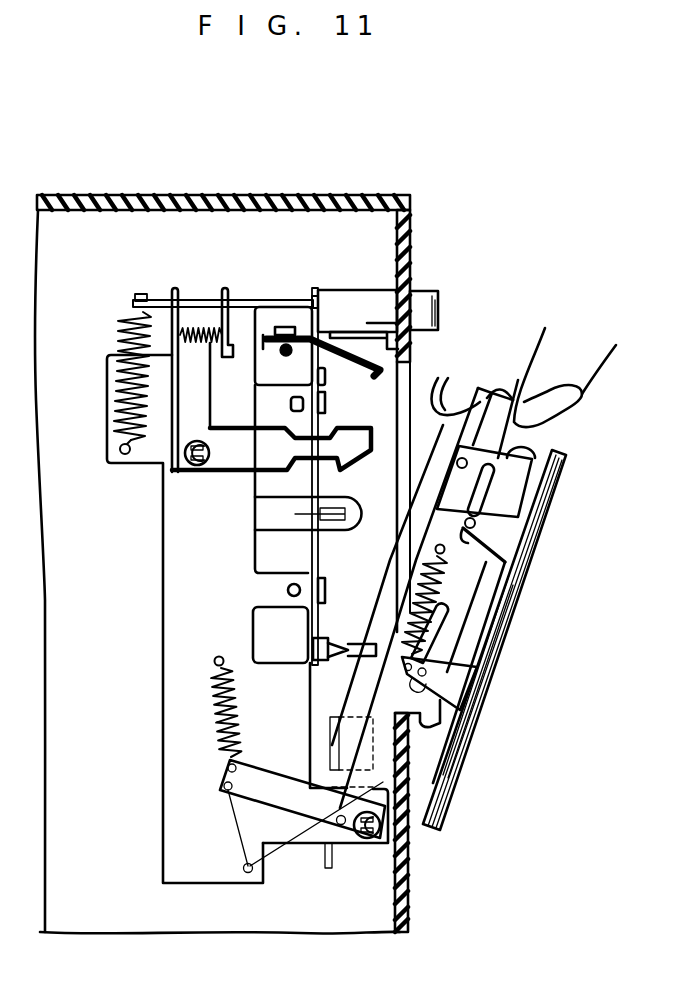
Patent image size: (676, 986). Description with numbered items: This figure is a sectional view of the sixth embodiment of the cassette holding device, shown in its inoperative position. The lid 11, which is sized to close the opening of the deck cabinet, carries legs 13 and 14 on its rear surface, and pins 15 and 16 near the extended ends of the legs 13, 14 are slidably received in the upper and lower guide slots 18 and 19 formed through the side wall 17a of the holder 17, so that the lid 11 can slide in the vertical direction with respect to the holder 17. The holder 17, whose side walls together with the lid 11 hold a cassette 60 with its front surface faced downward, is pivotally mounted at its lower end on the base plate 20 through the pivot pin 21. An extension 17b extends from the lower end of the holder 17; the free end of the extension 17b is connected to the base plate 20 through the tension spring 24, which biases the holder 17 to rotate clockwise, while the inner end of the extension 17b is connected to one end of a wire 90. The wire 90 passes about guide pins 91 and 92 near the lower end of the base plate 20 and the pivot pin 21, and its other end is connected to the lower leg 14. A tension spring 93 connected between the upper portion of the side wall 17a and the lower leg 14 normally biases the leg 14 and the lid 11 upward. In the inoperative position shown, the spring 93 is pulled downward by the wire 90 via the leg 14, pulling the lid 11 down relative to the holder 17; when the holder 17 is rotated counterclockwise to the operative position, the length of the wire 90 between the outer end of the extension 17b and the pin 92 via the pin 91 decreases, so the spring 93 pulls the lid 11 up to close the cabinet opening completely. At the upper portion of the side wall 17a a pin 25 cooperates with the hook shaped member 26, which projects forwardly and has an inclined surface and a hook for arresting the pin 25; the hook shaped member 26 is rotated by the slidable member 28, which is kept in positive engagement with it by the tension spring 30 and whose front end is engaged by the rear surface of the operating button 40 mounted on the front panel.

The lid 11 is at (505, 610).
The leg 13 is at (538, 546).
The lower leg 14 is at (478, 692).
The pin 15 is at (466, 520).
The pin 16 is at (408, 742).
The holder 17 is at (462, 632).
The side wall 17a is at (513, 584).
The extension 17b is at (265, 776).
The upper guide slot 18 is at (480, 496).
The lower guide slot 19 is at (445, 613).
The base plate 20 is at (166, 573).
The pivot pin 21 is at (409, 856).
The tension spring 24 is at (237, 714).
The pin 25 is at (458, 461).
The hook shaped member 26 is at (231, 470).
The slidable member 28 is at (283, 300).
The tension spring 30 is at (120, 414).
The operating button 40 is at (430, 292).
The cassette 60 is at (523, 428).
The wire 90 is at (290, 844).
The guide pin 91 is at (250, 874).
The guide pin 92 is at (335, 820).
The tension spring 93 is at (437, 580).